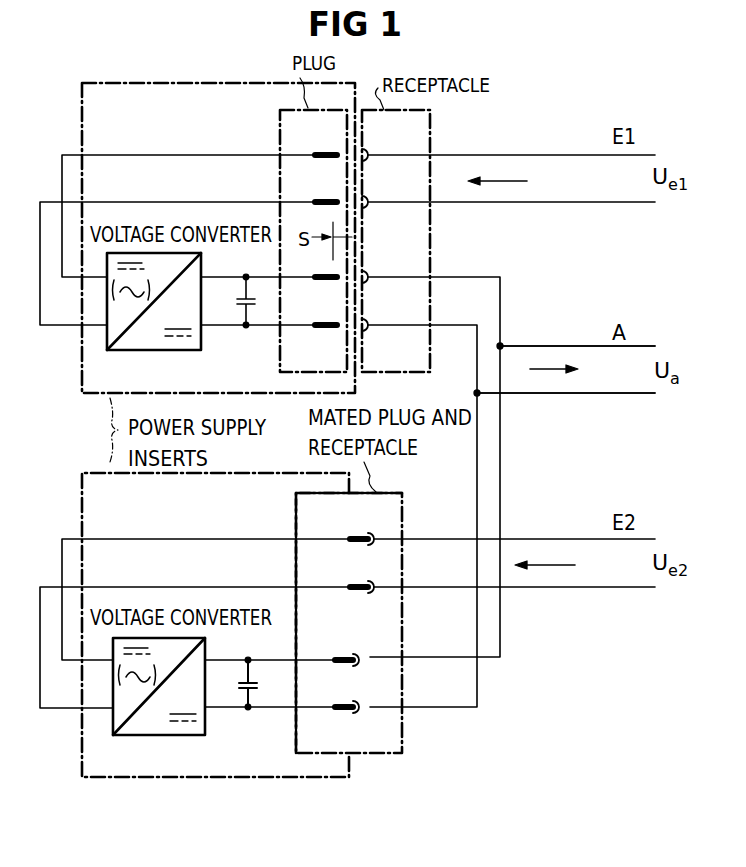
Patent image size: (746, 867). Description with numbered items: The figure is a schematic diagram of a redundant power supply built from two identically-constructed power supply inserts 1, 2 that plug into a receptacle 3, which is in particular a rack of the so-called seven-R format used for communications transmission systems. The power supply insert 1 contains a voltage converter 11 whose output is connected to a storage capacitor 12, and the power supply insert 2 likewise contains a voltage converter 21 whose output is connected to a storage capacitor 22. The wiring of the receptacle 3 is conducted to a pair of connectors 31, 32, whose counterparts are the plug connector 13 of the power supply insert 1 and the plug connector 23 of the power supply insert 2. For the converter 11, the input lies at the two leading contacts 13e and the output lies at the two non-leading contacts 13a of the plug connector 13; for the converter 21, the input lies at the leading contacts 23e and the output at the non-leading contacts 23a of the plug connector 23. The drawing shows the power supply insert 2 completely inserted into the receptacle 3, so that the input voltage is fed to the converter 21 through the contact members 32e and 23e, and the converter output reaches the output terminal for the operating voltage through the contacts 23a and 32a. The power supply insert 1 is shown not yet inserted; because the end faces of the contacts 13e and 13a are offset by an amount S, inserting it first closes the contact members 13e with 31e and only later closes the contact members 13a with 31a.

The power supply insert 1 is at (88, 128).
The power supply insert 2 is at (88, 500).
The receptacle 3 is at (569, 282).
The voltage converter 11 is at (150, 350).
The storage capacitor 12 is at (240, 302).
The plug connector 13 is at (282, 128).
The leading contacts 13e is at (328, 202).
The non-leading contacts 13a is at (328, 318).
The voltage converter 21 is at (143, 735).
The storage capacitor 22 is at (242, 686).
The plug connector 23 is at (290, 500).
The leading contacts 23e is at (340, 582).
The non-leading contacts 23a is at (340, 700).
The connector 31 is at (430, 124).
The contact members 31e is at (372, 160).
The contact members 31a is at (372, 282).
The connector 32 is at (399, 496).
The contact members 32e is at (376, 546).
The contact members 32a is at (366, 667).